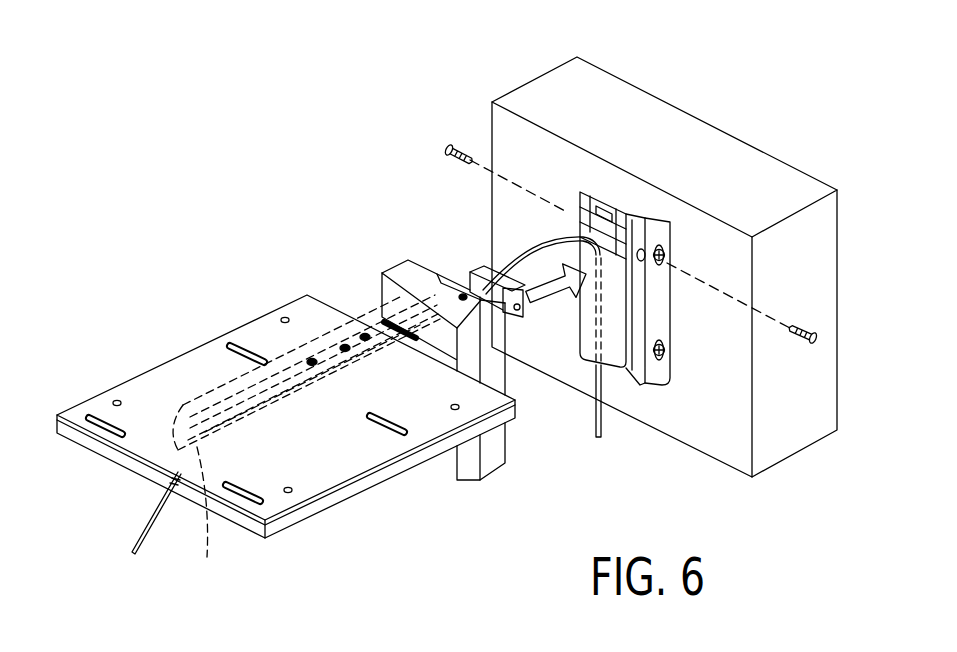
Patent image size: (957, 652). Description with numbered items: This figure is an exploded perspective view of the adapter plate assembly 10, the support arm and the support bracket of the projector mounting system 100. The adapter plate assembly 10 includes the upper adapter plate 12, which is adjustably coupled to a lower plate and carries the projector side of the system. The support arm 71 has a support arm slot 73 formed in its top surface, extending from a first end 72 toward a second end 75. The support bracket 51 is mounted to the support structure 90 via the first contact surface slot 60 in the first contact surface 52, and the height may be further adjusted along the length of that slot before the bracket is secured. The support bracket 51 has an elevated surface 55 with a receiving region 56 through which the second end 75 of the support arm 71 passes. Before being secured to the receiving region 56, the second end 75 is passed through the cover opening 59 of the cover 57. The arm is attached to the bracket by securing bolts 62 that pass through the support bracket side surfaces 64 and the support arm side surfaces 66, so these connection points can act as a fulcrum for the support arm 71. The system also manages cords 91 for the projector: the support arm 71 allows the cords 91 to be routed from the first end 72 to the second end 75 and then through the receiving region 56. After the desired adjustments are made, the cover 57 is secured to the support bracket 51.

The projector mounting system 100 is at (322, 150).
The adapter plate assembly 10 is at (326, 528).
The upper adapter plate 12 is at (100, 450).
The cords 91 is at (138, 530).
The support arm slot 73 is at (223, 405).
The first end 72 is at (200, 512).
The support arm 71 is at (372, 322).
The cover opening 59 is at (383, 283).
The second end 75 is at (467, 295).
The cover 57 is at (492, 460).
The support arm side surfaces 66 is at (520, 323).
The support structure 90 is at (580, 80).
The securing bolts 62 is at (447, 145).
The support bracket 51 is at (580, 190).
The first contact surface 52 is at (660, 307).
The receiving region 56 is at (617, 230).
The elevated surface 55 is at (613, 350).
The support bracket side surfaces 64 is at (633, 380).
The first contact surface slot 60 is at (667, 250).